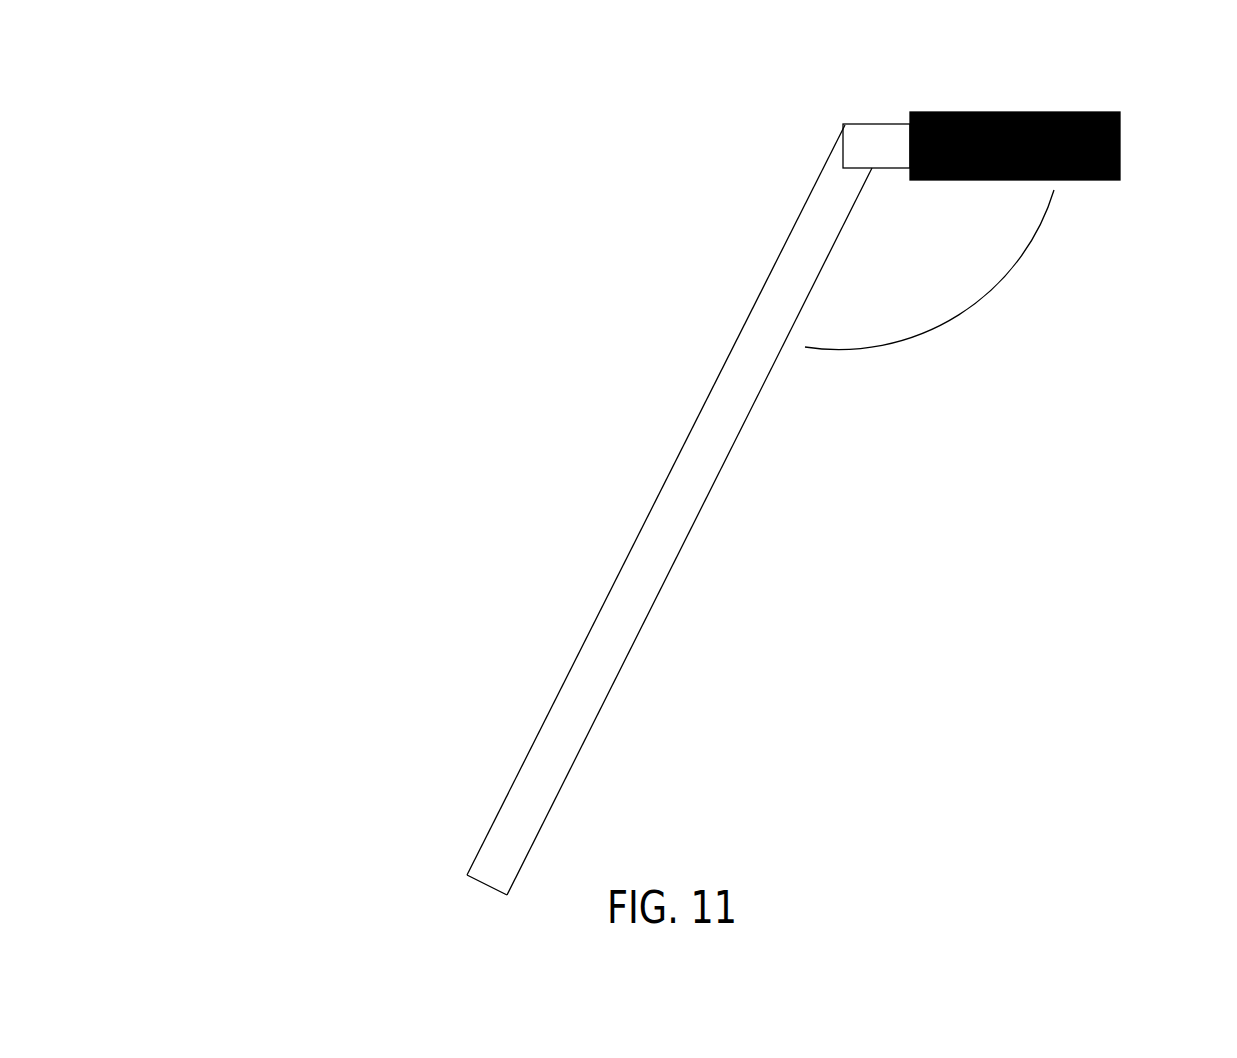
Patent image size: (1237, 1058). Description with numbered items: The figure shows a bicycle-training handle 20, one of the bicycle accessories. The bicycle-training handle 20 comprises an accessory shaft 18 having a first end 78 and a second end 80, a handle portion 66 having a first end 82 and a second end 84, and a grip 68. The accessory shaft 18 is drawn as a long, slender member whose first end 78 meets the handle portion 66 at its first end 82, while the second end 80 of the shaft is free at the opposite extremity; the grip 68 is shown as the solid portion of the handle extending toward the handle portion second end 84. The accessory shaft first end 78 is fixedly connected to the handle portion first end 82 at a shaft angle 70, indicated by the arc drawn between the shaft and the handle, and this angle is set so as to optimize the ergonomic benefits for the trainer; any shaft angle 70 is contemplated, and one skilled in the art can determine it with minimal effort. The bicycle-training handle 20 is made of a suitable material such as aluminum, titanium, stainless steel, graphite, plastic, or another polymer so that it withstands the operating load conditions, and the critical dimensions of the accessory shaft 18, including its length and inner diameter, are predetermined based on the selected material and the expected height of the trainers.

The accessory shaft 18 is at (569, 627).
The bicycle-training handle 20 is at (470, 407).
The handle portion 66 is at (900, 113).
The grip 68 is at (1130, 111).
The shaft angle 70 is at (941, 274).
The first end of accessory shaft 78 is at (836, 158).
The second end of accessory shaft 80 is at (482, 885).
The first end of handle portion 82 is at (865, 155).
The second end of handle portion 84 is at (1120, 143).